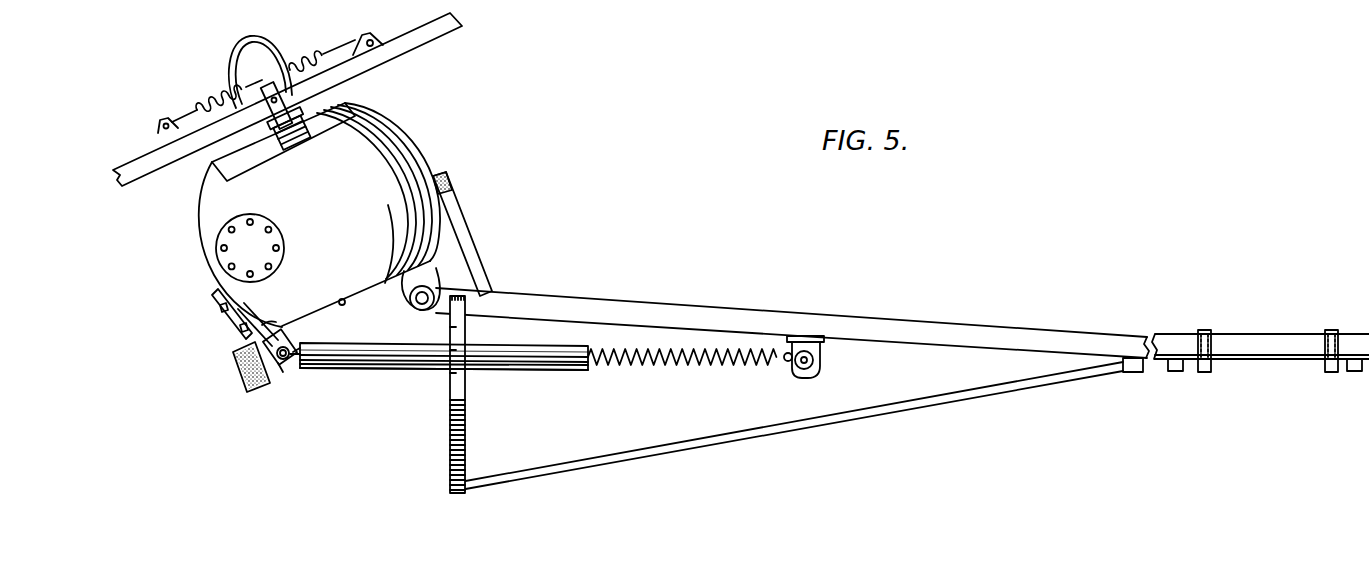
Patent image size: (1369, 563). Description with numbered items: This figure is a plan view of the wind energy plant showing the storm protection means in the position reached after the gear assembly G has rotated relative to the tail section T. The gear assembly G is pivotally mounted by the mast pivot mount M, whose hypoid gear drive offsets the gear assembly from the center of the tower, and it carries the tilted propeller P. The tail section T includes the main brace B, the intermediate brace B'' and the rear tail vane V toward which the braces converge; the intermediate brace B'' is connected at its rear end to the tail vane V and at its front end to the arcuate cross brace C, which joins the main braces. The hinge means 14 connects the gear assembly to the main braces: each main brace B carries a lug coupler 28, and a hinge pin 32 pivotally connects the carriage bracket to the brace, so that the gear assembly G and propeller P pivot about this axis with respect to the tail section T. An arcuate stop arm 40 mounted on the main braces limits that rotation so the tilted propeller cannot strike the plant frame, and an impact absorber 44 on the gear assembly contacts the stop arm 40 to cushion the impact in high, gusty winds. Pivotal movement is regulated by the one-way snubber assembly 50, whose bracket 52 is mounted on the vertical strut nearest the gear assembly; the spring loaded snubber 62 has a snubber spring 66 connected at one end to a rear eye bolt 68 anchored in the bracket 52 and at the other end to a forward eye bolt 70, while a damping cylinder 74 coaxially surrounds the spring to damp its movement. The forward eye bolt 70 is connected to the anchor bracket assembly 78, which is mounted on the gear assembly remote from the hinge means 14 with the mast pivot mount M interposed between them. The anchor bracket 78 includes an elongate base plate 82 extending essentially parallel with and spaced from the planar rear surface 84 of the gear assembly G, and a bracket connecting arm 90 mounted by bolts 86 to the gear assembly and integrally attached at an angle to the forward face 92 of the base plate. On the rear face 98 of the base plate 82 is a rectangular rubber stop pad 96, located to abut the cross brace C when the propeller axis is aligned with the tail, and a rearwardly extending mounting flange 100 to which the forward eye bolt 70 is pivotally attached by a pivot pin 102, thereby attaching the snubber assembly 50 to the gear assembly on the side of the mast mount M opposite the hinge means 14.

The propeller P is at (148, 102).
The anchor bracket assembly 78 is at (372, 0).
The stop pad 96 is at (245, 382).
The gear assembly G is at (186, 243).
The mast pivot mount M is at (270, 250).
The impact absorber 44 is at (436, 182).
The stop arm 40 is at (483, 253).
The lug coupler 28 is at (427, 290).
The hinge pin 32 is at (409, 298).
The planar rear surface 84 is at (340, 299).
The bracket connecting arm 90 is at (241, 308).
The rear face 98 is at (262, 325).
The forward face 92 is at (283, 326).
The bolts 86 is at (216, 307).
The base plate 82 is at (250, 344).
The mounting flange 100 is at (262, 385).
The pivot pin 102 is at (281, 368).
The forward eye bolt 70 is at (294, 355).
The hinge means 14 is at (408, 325).
The one-way snubber assembly 50 is at (352, 380).
The damping cylinder 74 is at (503, 356).
The spring loaded snubber 62 is at (537, 378).
The arcuate cross brace C is at (463, 408).
The snubber spring 66 is at (683, 362).
The rear eye bolt 68 is at (788, 368).
The bracket 52 is at (797, 378).
The main brace B is at (792, 311).
The tail section T is at (995, 303).
The intermediate brace B'' is at (801, 424).
The rear tail vane V is at (1246, 375).